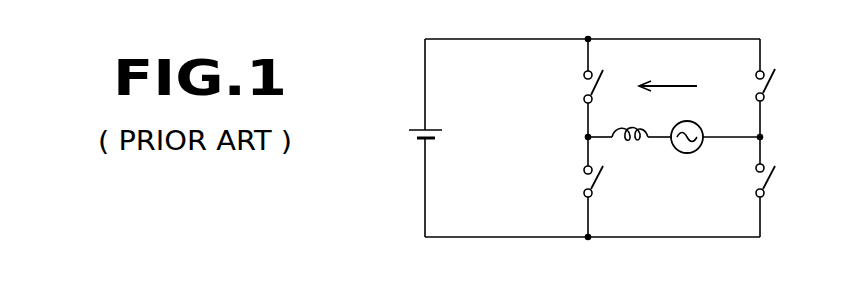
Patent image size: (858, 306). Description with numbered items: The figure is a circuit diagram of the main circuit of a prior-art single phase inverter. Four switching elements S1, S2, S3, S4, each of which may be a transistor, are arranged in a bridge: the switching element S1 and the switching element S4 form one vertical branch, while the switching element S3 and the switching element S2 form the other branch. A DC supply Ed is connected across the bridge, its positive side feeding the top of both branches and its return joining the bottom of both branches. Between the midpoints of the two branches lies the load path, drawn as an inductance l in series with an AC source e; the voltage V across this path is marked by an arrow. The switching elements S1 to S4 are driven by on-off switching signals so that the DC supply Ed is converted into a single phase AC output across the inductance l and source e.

The DC voltage source Ed is at (409, 131).
The switching element S1 is at (576, 86).
The switching element S2 is at (776, 185).
The switching element S3 is at (777, 87).
The switching element S4 is at (577, 182).
The inductor l is at (635, 125).
The AC voltage source e is at (694, 129).
The output voltage V is at (668, 75).